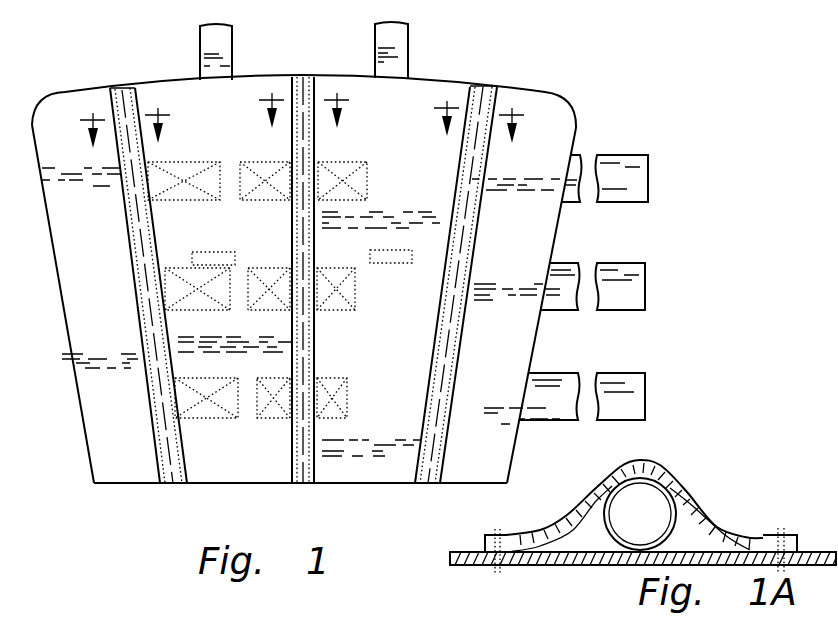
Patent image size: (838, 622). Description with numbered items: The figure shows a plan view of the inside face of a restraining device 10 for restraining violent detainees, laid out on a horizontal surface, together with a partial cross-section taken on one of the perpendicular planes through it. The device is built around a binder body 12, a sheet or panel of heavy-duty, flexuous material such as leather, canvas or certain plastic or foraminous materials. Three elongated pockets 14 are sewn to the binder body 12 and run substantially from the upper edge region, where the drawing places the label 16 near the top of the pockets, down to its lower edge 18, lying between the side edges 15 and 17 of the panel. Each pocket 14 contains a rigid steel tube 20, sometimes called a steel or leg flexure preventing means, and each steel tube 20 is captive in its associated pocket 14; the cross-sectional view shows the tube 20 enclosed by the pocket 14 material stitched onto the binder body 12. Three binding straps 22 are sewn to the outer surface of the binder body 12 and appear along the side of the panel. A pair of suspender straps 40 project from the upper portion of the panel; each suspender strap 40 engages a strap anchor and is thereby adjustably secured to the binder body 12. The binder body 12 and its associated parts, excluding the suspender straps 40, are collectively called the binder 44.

In FIG. 1, the restraining device 10 is at (104, 515).
In FIG. 1, the binder body 12 is at (252, 88).
In FIG. 1A, the binder body 12 is at (572, 566).
In FIG. 1, the elongated pocket 14 is at (302, 340).
In FIG. 1A, the elongated pocket 14 is at (665, 470).
In FIG. 1, the side edge 15 is at (77, 380).
In FIG. 1, the upper strip end 16 is at (138, 87).
In FIG. 1, the side edge 17 is at (535, 338).
In FIG. 1, the lower edge 18 is at (140, 485).
In FIG. 1A, the rigid steel tube 20 is at (690, 515).
In FIG. 1, the binding strap 22 is at (635, 177).
In FIG. 1, the suspender strap 40 is at (207, 47).
In FIG. 1, the binder 44 is at (578, 100).